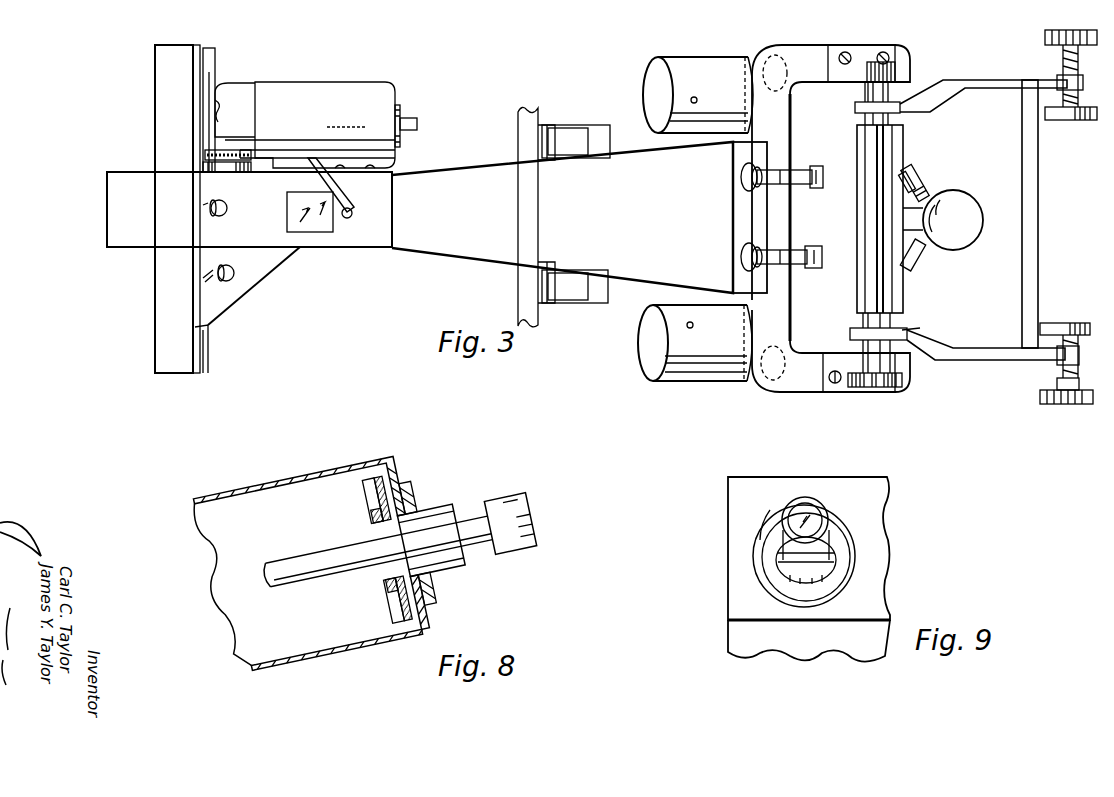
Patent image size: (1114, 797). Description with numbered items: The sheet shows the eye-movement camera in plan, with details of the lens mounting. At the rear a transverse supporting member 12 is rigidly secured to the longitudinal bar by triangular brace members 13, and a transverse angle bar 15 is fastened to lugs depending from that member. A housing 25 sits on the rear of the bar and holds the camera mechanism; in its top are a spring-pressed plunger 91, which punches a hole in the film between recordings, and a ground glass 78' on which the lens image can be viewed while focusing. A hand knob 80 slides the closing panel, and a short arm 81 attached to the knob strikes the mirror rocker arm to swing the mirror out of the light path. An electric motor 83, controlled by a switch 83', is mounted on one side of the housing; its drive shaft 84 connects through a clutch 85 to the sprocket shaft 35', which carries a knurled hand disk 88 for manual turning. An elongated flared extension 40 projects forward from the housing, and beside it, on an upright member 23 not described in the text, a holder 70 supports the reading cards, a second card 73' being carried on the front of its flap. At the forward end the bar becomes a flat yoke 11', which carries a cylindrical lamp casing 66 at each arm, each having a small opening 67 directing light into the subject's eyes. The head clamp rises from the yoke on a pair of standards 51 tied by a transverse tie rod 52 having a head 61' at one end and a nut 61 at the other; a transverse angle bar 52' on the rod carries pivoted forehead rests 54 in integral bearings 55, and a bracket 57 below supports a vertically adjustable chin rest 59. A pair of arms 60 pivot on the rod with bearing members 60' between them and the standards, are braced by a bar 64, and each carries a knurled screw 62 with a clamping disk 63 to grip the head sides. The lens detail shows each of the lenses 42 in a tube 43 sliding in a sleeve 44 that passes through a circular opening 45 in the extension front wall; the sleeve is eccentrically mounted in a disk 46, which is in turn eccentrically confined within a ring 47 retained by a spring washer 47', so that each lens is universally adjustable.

In FIG. 3, the transverse supporting member 12 is at (152, 318).
In FIG. 3, the triangular shaped brace members 13 is at (265, 270).
In FIG. 3, the transverse angle bar 15 is at (208, 338).
In FIG. 3, the housing 25 is at (110, 218).
In FIG. 3, the spring-pressed plunger 91 is at (206, 208).
In FIG. 3, the ground glass 78' is at (292, 212).
In FIG. 3, the short arm 81 is at (350, 197).
In FIG. 3, the hand knob 80 is at (393, 215).
In FIG. 3, the flared extension 40 is at (505, 258).
In FIG. 8, the flared extension 40 is at (314, 472).
In FIG. 9, the flared extension 40 is at (885, 490).
In FIG. 3, the electric motor 83 is at (343, 113).
In FIG. 3, the switch 83' is at (157, 110).
In FIG. 3, the drive shaft 84 is at (228, 140).
In FIG. 3, the clutch 85 is at (248, 150).
In FIG. 3, the knurled hand disk 88 is at (205, 168).
In FIG. 3, the sprocket shaft 35' is at (233, 181).
In FIG. 3, the upright strip 23 is at (518, 125).
In FIG. 3, the second card 73' is at (576, 122).
In FIG. 3, the holder 70 is at (560, 300).
In FIG. 3, the cylindrical casing 66 is at (692, 60).
In FIG. 3, the small opening 67 is at (696, 100).
In FIG. 3, the flat yoke 11' is at (831, 216).
In FIG. 3, the circular opening 45 is at (745, 183).
In FIG. 8, the circular opening 45 is at (405, 495).
In FIG. 9, the circular opening 45 is at (760, 540).
In FIG. 3, the sleeve 44 is at (758, 163).
In FIG. 8, the sleeve 44 is at (437, 517).
In FIG. 9, the sleeve 44 is at (785, 566).
In FIG. 3, the tube 43 is at (806, 165).
In FIG. 8, the tube 43 is at (470, 520).
In FIG. 9, the tube 43 is at (830, 556).
In FIG. 3, the lenses 42 is at (820, 168).
In FIG. 8, the lenses 42 is at (520, 517).
In FIG. 9, the lenses 42 is at (815, 512).
In FIG. 3, the standards 51 is at (856, 72).
In FIG. 3, the head 61' is at (918, 59).
In FIG. 3, the nut 61 is at (876, 394).
In FIG. 3, the transverse angle bar 52' is at (910, 212).
In FIG. 3, the transverse tie rod 52 is at (850, 219).
In FIG. 3, the bearings 55 is at (925, 165).
In FIG. 3, the forehead rests 54 is at (927, 175).
In FIG. 3, the bracket 57 is at (930, 200).
In FIG. 3, the chin rest 59 is at (968, 240).
In FIG. 3, the bar 64 is at (1040, 216).
In FIG. 3, the arms 60 is at (991, 226).
In FIG. 3, the bearing members 60' is at (932, 319).
In FIG. 3, the screw 62 is at (1078, 68).
In FIG. 3, the clamping disk 63 is at (1070, 120).
In FIG. 8, the ring 47 is at (374, 556).
In FIG. 8, the spring washer 47' is at (359, 572).
In FIG. 8, the disk 46 is at (400, 478).
In FIG. 9, the disk 46 is at (830, 588).